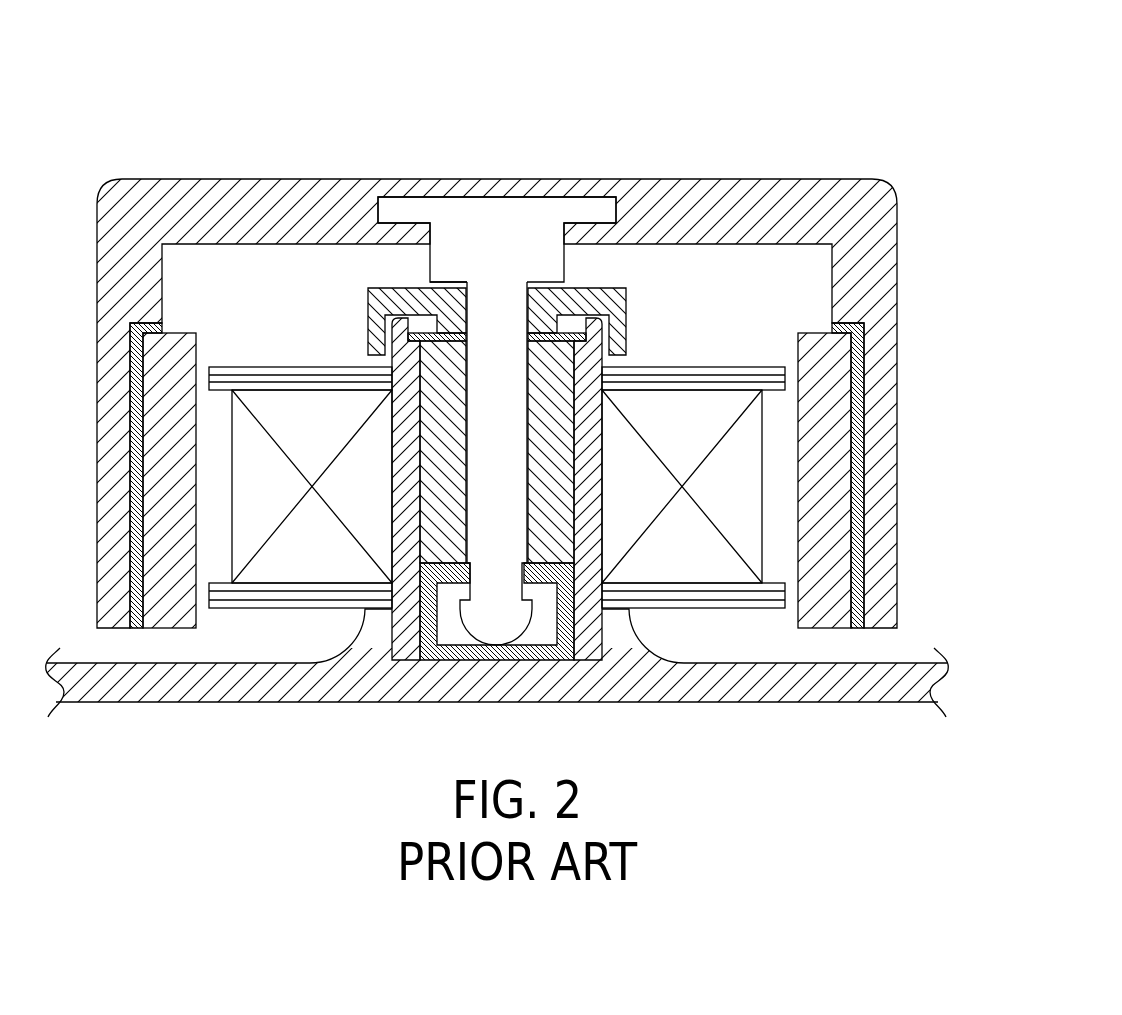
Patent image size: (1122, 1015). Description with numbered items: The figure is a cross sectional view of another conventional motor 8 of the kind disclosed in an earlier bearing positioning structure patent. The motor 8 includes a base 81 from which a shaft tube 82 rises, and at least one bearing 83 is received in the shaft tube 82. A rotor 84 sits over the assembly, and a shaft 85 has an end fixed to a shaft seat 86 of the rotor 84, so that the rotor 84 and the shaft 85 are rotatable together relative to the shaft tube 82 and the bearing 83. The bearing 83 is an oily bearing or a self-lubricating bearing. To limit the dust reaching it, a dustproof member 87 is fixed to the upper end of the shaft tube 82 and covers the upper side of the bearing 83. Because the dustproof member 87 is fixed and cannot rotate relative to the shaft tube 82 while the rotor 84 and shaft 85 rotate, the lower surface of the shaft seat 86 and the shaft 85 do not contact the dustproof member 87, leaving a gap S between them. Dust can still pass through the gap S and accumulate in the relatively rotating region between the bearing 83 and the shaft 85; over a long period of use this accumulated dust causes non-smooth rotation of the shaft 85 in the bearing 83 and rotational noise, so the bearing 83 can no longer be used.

The conventional motor 8 is at (668, 101).
The base 81 is at (676, 688).
The shaft tube 82 is at (588, 440).
The bearing 83 is at (437, 371).
The rotor 84 is at (782, 195).
The shaft 85 is at (503, 332).
The shaft seat 86 is at (468, 238).
The dustproof member 87 is at (591, 303).
The gap S is at (460, 274).